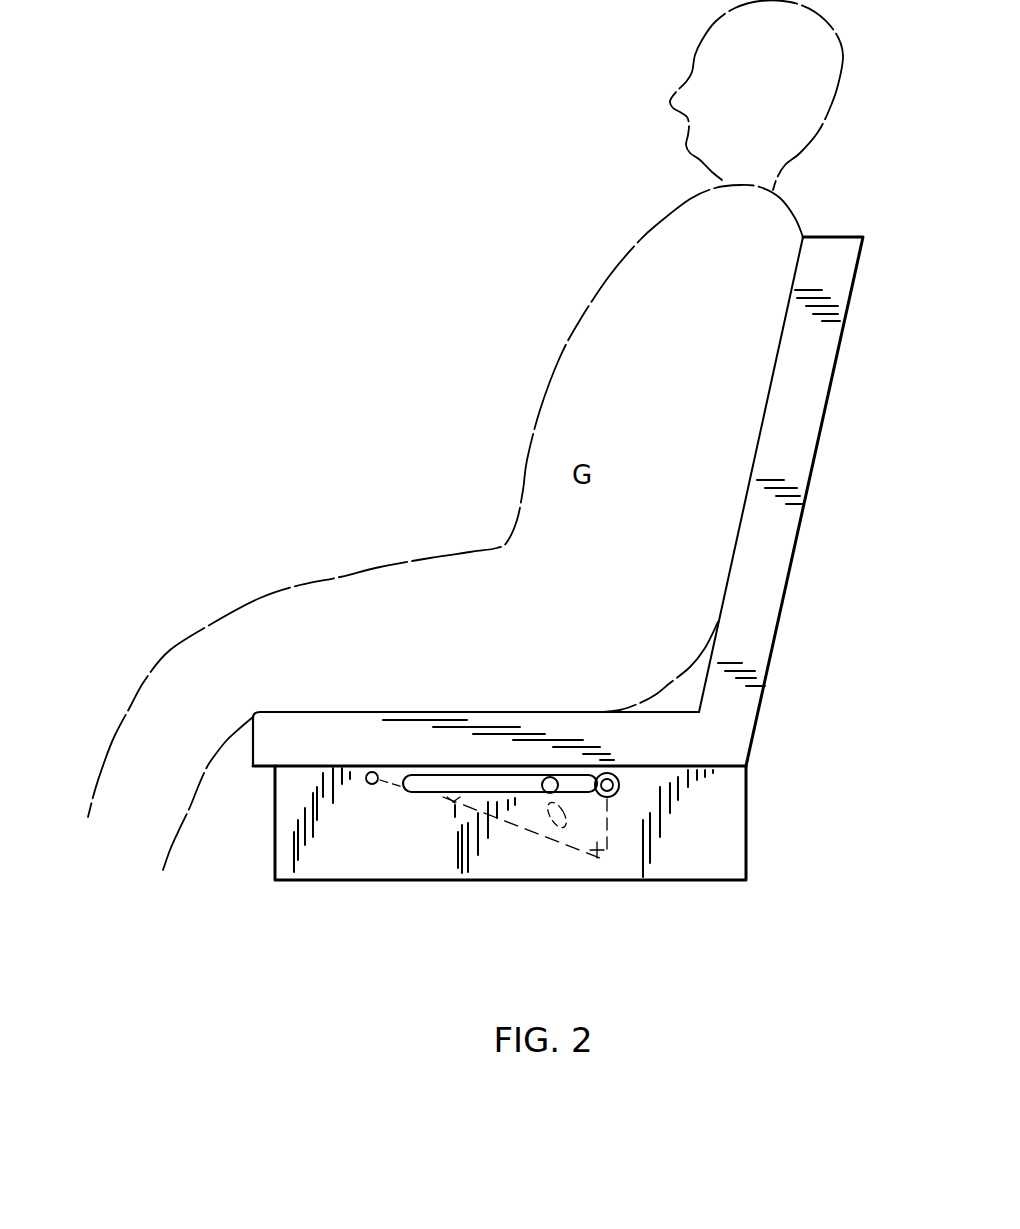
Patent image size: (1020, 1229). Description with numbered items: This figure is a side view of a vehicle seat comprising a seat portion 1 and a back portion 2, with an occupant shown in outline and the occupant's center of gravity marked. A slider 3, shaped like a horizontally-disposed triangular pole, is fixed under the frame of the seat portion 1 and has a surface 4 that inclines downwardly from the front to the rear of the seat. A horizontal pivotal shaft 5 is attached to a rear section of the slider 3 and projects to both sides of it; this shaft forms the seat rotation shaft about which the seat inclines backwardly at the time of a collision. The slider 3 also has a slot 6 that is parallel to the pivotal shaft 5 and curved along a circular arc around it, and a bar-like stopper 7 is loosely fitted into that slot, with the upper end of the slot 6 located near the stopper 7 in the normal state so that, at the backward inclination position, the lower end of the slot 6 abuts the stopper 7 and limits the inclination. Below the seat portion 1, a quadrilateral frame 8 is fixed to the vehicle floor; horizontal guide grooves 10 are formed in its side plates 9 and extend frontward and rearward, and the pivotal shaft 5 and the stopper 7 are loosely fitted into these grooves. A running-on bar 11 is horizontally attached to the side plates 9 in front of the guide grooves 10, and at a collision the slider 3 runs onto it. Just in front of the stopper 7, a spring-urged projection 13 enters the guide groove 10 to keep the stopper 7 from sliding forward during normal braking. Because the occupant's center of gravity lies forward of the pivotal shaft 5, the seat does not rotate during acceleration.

The seat portion 1 is at (298, 740).
The back portion 2 is at (782, 450).
The slider 3 is at (600, 862).
The surface 4 is at (458, 860).
The pivotal shaft 5 is at (607, 773).
The slot 6 is at (553, 795).
The stopper 7 is at (548, 775).
The frame 8 is at (748, 862).
The side plates 9 is at (327, 868).
The guide grooves 10 is at (410, 785).
The running-on bar 11 is at (372, 772).
The projection 13 is at (522, 790).